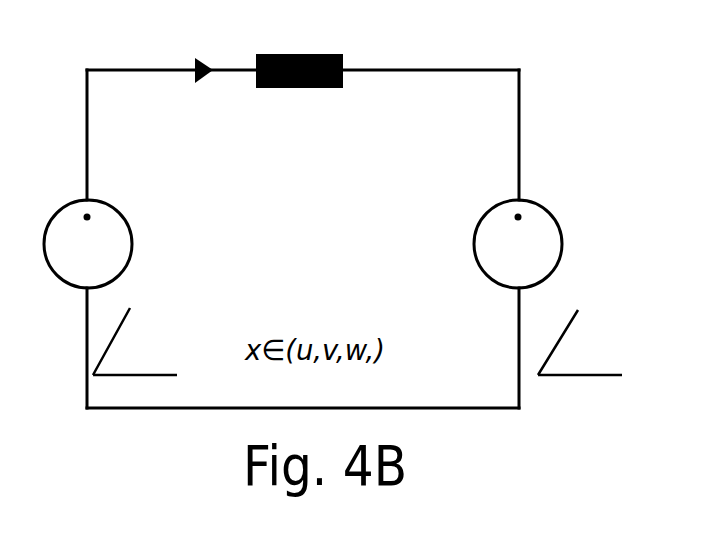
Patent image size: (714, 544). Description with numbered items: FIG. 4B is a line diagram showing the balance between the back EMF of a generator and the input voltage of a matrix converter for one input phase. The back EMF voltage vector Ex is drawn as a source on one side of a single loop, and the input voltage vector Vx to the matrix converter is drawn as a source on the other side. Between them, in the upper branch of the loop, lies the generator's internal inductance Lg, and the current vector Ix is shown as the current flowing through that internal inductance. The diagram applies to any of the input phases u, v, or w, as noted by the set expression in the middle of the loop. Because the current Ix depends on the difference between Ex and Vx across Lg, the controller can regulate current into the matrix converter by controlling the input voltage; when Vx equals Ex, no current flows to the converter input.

The internal inductance Lg is at (299, 52).
The current vector Ix is at (204, 44).
The back EMF voltage vector Ex is at (157, 185).
The input voltage vector Vx is at (593, 185).